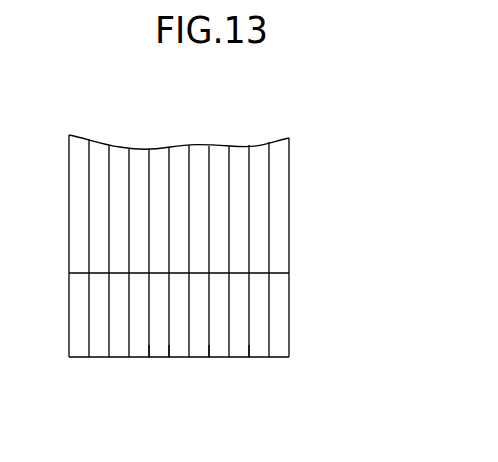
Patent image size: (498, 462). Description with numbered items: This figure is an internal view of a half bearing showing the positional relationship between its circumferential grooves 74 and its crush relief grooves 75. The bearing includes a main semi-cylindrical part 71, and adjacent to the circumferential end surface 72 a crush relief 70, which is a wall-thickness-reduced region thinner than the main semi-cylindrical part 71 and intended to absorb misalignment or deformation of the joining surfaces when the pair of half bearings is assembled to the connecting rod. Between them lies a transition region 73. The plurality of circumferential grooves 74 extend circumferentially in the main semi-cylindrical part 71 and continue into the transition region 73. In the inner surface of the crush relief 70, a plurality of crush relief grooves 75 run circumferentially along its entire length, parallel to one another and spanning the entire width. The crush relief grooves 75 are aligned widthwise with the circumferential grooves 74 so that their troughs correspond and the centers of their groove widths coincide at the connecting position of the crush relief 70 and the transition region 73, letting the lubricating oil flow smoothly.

The crush relief 70 is at (291, 317).
The main semi-cylindrical part 71 is at (291, 200).
The circumferential end surface 72 is at (278, 358).
The transition region 73 is at (291, 263).
The circumferential groove 74 is at (158, 146).
The crush relief groove 75 is at (157, 361).